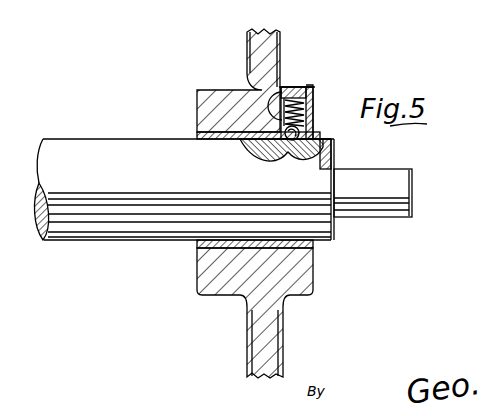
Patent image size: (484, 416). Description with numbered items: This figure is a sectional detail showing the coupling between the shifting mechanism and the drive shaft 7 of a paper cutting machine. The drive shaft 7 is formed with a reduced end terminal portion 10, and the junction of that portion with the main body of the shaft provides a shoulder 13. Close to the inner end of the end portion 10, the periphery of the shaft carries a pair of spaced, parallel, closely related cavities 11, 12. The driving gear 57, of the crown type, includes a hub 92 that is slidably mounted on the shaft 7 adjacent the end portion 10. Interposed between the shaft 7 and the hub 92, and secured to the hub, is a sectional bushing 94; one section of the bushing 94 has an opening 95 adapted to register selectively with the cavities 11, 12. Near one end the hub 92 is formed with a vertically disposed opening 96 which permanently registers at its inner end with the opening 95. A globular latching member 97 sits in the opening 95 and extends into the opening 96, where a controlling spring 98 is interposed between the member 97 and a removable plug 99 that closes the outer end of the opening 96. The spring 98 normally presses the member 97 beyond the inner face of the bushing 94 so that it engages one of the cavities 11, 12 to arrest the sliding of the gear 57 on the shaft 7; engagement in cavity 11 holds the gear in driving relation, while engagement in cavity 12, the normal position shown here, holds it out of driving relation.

The drive shaft 7 is at (94, 157).
The reduced end terminal portion 10 is at (398, 186).
The cavity 11 is at (267, 157).
The cavity 12 is at (310, 143).
The shoulder 13 is at (336, 150).
The driving gear 57 is at (278, 340).
The hub 92 is at (197, 102).
The sectional bushing 94 is at (220, 130).
The opening 95 is at (322, 127).
The vertically disposed opening 96 is at (314, 112).
The globular latching member 97 is at (295, 141).
The controlling spring 98 is at (283, 90).
The removable plug 99 is at (312, 88).